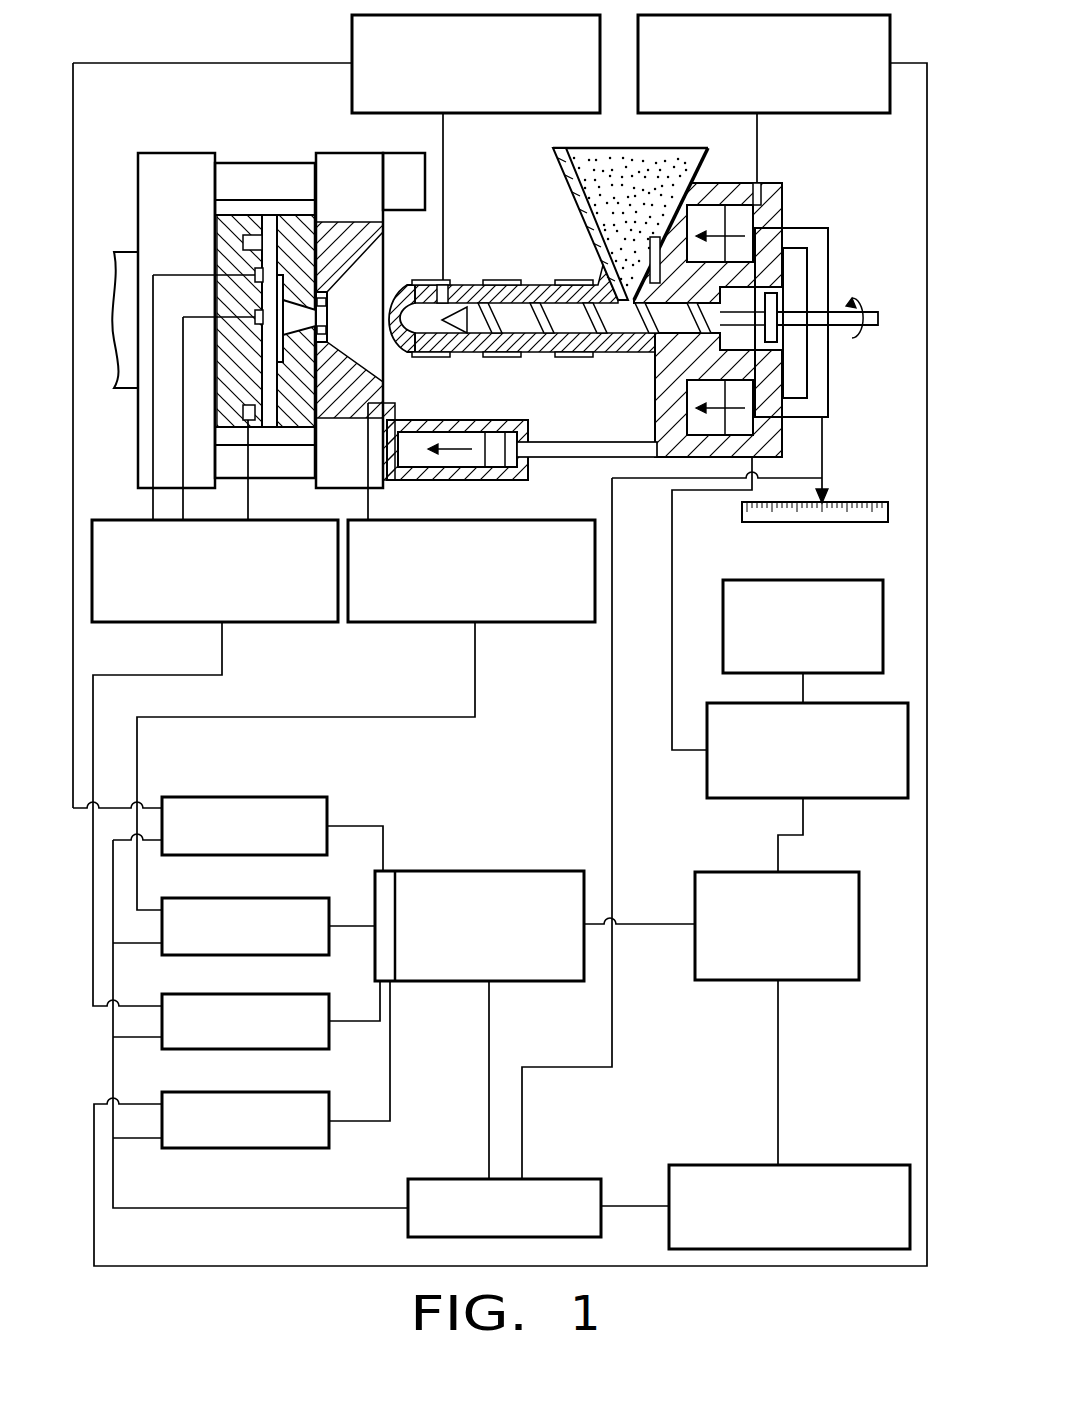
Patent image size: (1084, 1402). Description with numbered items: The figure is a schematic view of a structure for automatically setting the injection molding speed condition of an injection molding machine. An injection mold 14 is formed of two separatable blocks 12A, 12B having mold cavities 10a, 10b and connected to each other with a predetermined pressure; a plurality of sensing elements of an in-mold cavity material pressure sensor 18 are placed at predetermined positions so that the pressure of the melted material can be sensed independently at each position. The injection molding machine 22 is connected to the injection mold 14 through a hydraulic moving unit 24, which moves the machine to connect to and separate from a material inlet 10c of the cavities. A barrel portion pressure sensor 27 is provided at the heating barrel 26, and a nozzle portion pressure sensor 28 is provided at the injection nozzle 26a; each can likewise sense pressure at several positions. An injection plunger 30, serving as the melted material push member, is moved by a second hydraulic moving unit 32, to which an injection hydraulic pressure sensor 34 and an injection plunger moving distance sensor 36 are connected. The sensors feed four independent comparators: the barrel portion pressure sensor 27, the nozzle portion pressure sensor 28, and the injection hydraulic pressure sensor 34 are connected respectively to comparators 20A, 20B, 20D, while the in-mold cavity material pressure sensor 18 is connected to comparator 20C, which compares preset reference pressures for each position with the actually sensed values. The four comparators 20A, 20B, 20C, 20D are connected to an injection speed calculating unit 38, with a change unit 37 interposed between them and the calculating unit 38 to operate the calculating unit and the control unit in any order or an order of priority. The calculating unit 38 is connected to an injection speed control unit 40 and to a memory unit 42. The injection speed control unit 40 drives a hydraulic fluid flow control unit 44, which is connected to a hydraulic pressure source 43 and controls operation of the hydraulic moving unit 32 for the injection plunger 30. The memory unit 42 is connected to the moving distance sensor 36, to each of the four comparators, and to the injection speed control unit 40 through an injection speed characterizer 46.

The mold cavity 10a is at (243, 246).
The mold cavity 10b is at (324, 299).
The material inlet 10c is at (324, 329).
The separatable block 12A is at (239, 301).
The separatable block 12B is at (356, 306).
The injection mold 14 is at (268, 279).
The in-mold cavity material pressure sensor 18 is at (260, 622).
The comparator 20A is at (268, 797).
The comparator 20B is at (278, 898).
The comparator 20C is at (278, 994).
The comparator 20D is at (275, 1092).
The injection molding machine 22 is at (527, 232).
The hydraulic moving unit 24 is at (480, 420).
The heating barrel 26 is at (522, 305).
The injection nozzle 26a is at (400, 332).
The barrel portion pressure sensor 27 is at (352, 40).
The nozzle portion pressure sensor 28 is at (552, 622).
The injection plunger 30 is at (524, 326).
The hydraulic moving unit 32 is at (800, 210).
The injection hydraulic pressure sensor 34 is at (877, 114).
The injection plunger moving distance sensor 36 is at (828, 524).
The change unit 37 is at (392, 870).
The injection speed calculating unit 38 is at (479, 894).
The injection speed control unit 40 is at (830, 982).
The memory unit 42 is at (432, 1179).
The hydraulic pressure source 43 is at (740, 580).
The hydraulic fluid flow control unit 44 is at (858, 800).
The injection speed characterizer 46 is at (855, 1165).